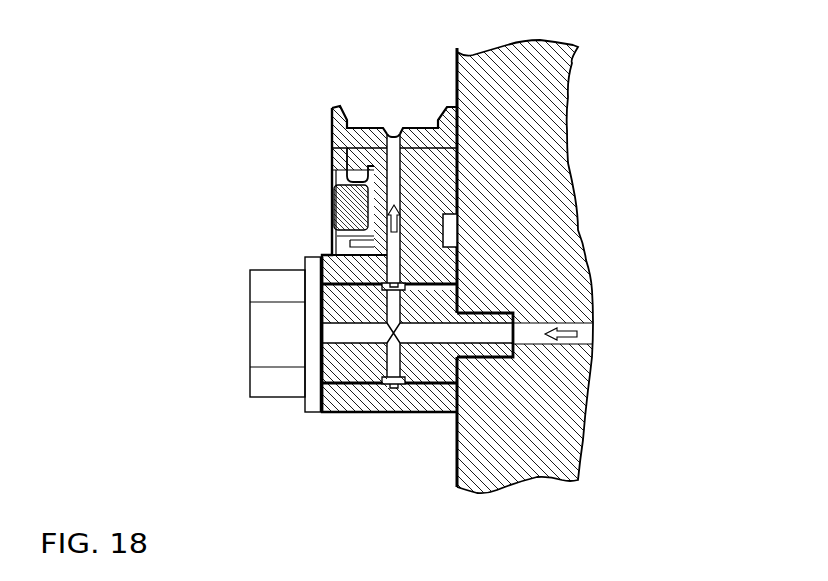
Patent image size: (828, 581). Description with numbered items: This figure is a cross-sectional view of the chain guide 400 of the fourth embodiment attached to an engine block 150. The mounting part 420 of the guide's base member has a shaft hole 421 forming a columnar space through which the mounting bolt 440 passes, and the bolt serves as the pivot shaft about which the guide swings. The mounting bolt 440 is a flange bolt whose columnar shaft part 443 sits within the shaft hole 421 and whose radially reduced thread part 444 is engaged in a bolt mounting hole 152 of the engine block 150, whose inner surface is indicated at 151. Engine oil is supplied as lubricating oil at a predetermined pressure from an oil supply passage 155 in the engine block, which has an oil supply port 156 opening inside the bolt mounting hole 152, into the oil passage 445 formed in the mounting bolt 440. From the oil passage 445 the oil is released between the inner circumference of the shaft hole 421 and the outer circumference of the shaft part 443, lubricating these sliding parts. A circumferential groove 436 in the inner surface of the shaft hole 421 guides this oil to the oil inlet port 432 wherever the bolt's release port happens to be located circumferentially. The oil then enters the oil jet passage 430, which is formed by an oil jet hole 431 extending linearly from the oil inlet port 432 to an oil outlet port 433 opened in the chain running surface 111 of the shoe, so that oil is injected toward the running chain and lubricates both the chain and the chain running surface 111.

The chain running surface 111 is at (364, 128).
The engine block 150 is at (557, 103).
The wall inner surface 151 is at (456, 58).
The bolt mounting hole 152 is at (514, 347).
The oil supply passage 155 is at (590, 334).
The oil supply port 156 is at (545, 350).
The chain guide 400 is at (412, 287).
The mounting part 420 is at (259, 379).
The shaft hole 421 is at (320, 365).
The oil jet passage 430 is at (433, 287).
The oil jet hole 431 is at (401, 189).
The oil inlet port 432 is at (404, 286).
The oil outlet port 433 is at (393, 130).
The circumferential groove 436 is at (392, 388).
The mounting bolt 440 is at (251, 287).
The shaft part 443 is at (342, 295).
The thread part 444 is at (475, 362).
The oil passage 445 is at (425, 340).